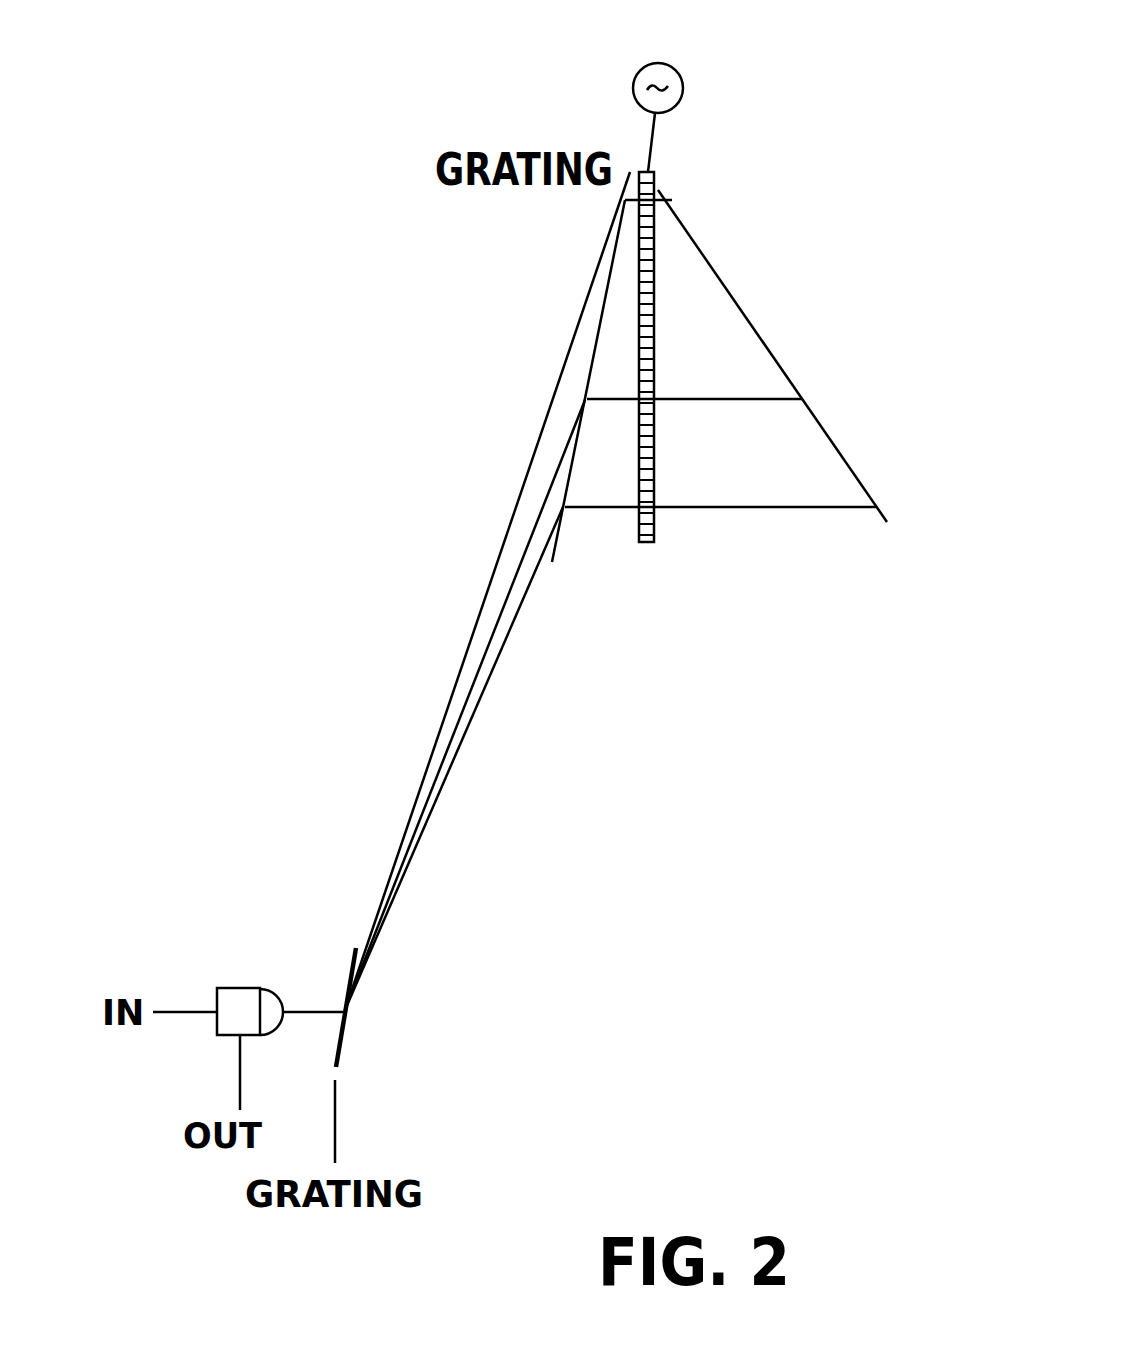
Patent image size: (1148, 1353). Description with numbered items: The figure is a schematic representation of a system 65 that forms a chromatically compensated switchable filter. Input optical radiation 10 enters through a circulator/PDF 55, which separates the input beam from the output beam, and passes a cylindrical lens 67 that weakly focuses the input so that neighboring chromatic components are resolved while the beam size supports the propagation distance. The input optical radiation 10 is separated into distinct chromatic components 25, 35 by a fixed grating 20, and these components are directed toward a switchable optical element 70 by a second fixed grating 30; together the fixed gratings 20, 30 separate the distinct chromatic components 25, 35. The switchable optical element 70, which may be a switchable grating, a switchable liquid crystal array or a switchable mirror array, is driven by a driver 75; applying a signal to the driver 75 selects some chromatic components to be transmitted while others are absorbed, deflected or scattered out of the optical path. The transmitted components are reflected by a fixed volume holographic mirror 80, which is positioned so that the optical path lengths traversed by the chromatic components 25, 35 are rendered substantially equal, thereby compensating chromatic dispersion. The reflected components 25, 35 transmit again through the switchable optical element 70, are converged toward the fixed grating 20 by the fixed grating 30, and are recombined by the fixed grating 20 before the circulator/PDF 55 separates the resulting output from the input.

The input optical radiation 10 is at (187, 1012).
The fixed grating 20 is at (343, 1043).
The distinct chromatic component 25 is at (438, 733).
The fixed grating 30 is at (558, 531).
The distinct chromatic component 35 is at (440, 793).
The circulator/PDF 55 is at (237, 988).
The system 65 is at (769, 868).
The cylindrical lens 67 is at (272, 1032).
The switchable optical element 70 is at (654, 556).
The driver 75 is at (673, 67).
The fixed volume holographic mirror 80 is at (833, 437).